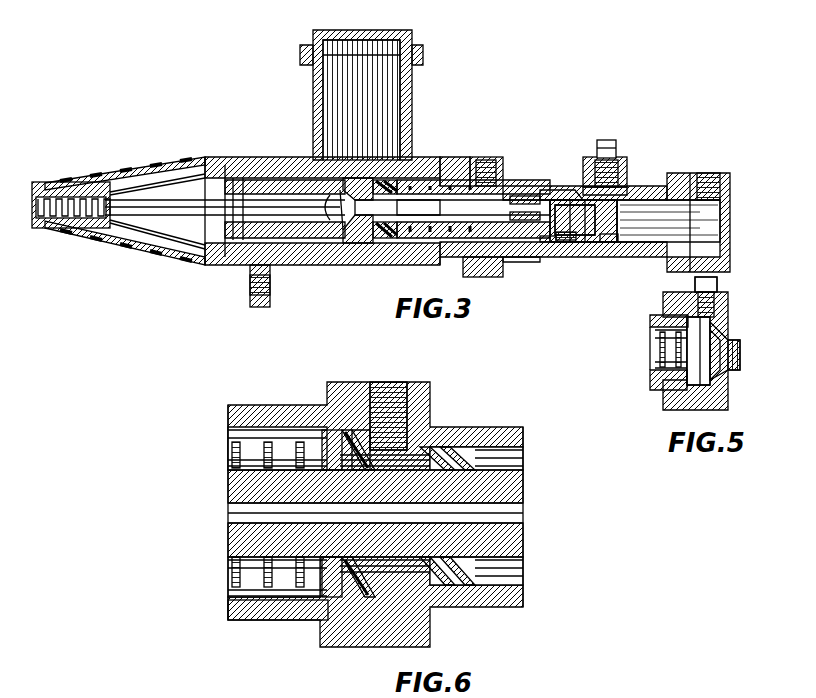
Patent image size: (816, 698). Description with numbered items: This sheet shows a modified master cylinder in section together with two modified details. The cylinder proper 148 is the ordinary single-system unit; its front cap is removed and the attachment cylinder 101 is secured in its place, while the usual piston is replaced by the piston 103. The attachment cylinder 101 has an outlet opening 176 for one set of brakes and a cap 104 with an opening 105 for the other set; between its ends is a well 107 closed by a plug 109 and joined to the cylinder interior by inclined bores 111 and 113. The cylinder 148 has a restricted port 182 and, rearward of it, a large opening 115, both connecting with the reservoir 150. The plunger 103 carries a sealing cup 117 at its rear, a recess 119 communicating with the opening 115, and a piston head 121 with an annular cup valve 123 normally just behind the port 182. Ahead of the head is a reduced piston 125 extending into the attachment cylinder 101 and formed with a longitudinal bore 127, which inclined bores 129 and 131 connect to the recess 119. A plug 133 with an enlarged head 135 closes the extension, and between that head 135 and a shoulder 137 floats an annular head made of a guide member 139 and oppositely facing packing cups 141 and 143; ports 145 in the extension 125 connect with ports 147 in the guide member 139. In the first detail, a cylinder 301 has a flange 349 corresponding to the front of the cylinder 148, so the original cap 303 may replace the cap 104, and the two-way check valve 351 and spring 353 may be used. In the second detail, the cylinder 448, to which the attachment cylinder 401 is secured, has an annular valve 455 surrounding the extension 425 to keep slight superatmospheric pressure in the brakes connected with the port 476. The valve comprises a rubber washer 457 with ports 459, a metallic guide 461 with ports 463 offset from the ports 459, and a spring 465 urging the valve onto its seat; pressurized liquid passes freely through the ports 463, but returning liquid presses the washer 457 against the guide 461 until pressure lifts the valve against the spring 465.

In FIG. 3, the attachment cylinder 101 is at (535, 262).
In FIG. 3, the piston 103 is at (250, 258).
In FIG. 3, the cap 104 is at (730, 215).
In FIG. 3, the opening 105 is at (708, 172).
In FIG. 3, the well 107 is at (625, 172).
In FIG. 3, the plug 109 is at (606, 150).
In FIG. 3, the inclined bore 111 is at (628, 188).
In FIG. 3, the inclined bore 113 is at (555, 186).
In FIG. 3, the opening 115 is at (330, 182).
In FIG. 3, the sealing cup 117 is at (243, 172).
In FIG. 3, the recess 119 is at (330, 255).
In FIG. 3, the piston head 121 is at (352, 242).
In FIG. 3, the annular cup valve 123 is at (372, 255).
In FIG. 3, the reduced piston 125 is at (442, 185).
In FIG. 3, the bore 127 is at (468, 268).
In FIG. 3, the inclined bore 129 is at (348, 205).
In FIG. 3, the inclined bore 131 is at (346, 248).
In FIG. 3, the plug 133 is at (578, 245).
In FIG. 3, the enlarged head 135 is at (620, 218).
In FIG. 3, the shoulder 137 is at (510, 276).
In FIG. 3, the guide member 139 is at (562, 246).
In FIG. 3, the annular packing cup 141 is at (612, 246).
In FIG. 3, the annular packing cup 143 is at (520, 192).
In FIG. 3, the ports 145 is at (535, 212).
In FIG. 3, the ports 147 is at (547, 246).
In FIG. 3, the cylinder 148 is at (315, 265).
In FIG. 3, the reservoir 150 is at (410, 105).
In FIG. 3, the outlet opening 176 is at (486, 170).
In FIG. 3, the restricted port 182 is at (388, 148).
In FIG. 5, the cylinder 301 is at (660, 380).
In FIG. 5, the cap 303 is at (715, 395).
In FIG. 5, the flange 349 is at (665, 322).
In FIG. 5, the two-way check valve 351 is at (715, 320).
In FIG. 5, the spring 353 is at (665, 350).
In FIG. 6, the attachment cylinder 401 is at (470, 590).
In FIG. 6, the extension 425 is at (240, 545).
In FIG. 6, the cylinder 448 is at (272, 612).
In FIG. 6, the annular valve 455 is at (356, 450).
In FIG. 6, the rubber washer 457 is at (345, 600).
In FIG. 6, the ports 459 is at (364, 440).
In FIG. 6, the metallic guide 461 is at (330, 450).
In FIG. 6, the ports 463 is at (332, 582).
In FIG. 6, the spring 465 is at (262, 568).
In FIG. 6, the port 476 is at (392, 400).